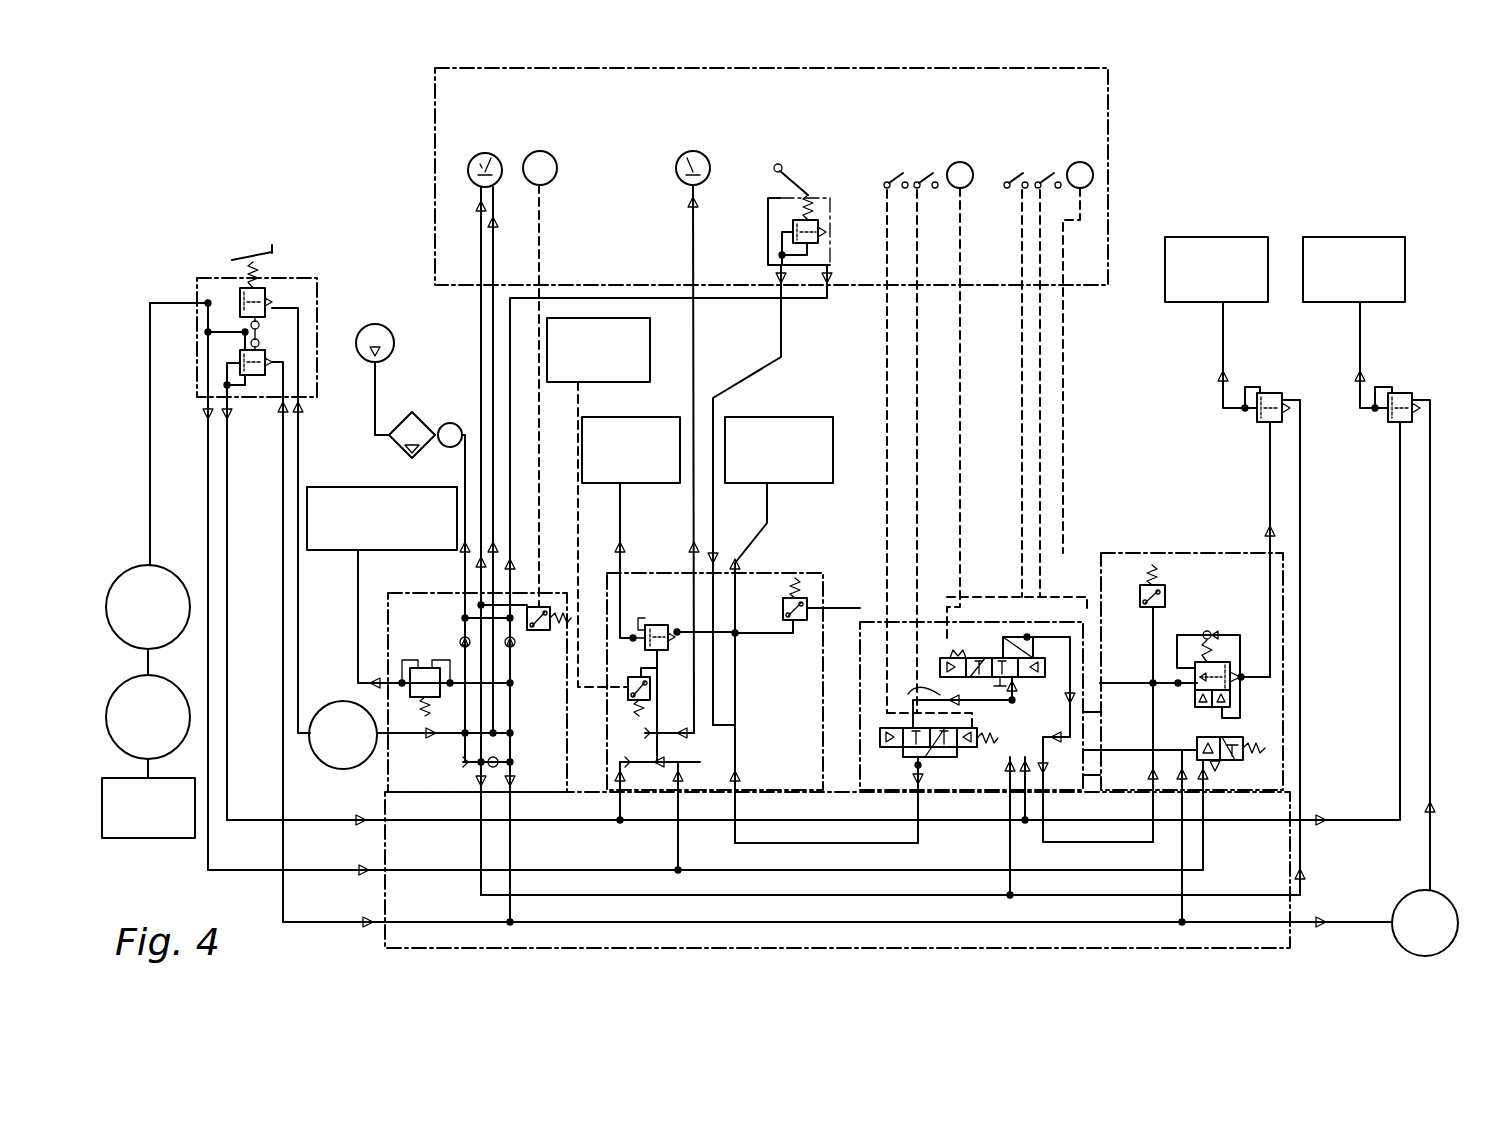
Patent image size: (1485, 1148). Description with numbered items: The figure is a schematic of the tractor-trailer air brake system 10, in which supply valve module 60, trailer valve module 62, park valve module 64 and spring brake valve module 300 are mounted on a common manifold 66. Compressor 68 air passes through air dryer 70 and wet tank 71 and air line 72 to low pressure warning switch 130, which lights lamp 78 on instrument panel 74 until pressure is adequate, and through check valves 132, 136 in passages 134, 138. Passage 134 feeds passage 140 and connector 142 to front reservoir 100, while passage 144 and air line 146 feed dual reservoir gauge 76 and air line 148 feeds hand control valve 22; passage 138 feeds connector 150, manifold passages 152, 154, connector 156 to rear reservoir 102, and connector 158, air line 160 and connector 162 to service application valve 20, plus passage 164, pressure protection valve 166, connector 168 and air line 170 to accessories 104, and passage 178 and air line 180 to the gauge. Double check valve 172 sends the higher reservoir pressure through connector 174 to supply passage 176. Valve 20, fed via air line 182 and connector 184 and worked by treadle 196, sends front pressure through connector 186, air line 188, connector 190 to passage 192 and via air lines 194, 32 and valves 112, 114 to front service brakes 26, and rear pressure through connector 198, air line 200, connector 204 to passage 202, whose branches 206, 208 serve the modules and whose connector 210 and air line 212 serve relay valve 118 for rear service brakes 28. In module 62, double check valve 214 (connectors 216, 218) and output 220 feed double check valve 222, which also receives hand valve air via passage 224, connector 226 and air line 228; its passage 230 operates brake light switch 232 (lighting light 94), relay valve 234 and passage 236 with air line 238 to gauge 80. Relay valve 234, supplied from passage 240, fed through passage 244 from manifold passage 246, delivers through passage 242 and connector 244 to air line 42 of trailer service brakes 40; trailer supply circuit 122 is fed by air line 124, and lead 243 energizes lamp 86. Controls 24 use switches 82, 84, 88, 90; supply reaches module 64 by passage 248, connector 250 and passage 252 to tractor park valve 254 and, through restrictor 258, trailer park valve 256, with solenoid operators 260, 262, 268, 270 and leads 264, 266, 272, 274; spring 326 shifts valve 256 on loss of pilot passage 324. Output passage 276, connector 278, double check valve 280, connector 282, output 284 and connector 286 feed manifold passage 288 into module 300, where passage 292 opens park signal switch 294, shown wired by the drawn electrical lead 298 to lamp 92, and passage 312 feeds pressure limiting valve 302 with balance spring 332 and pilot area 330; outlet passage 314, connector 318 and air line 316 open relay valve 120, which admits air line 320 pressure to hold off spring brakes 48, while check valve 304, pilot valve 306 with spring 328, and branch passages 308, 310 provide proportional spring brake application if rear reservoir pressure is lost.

The system 10 is at (328, 188).
The air brake service application valve 20 is at (205, 278).
The trailer brake hand control valve 22 is at (764, 215).
The electrical parking brake controls 24 is at (985, 115).
The front service brakes 26 is at (173, 840).
The rear service brakes 28 is at (1378, 240).
The air line 32 is at (148, 395).
The trailer service brakes 40 is at (640, 417).
The air line 42 is at (618, 540).
The tractor rear spring brakes 48 is at (1242, 240).
The supply valve module 60 is at (440, 590).
The trailer valve module 62 is at (818, 573).
The park valve module 64 is at (875, 617).
The manifold 66 is at (380, 940).
The compressor 68 is at (374, 325).
The air dryer 70 is at (411, 412).
The wet tank 71 is at (446, 424).
The air line 72 is at (466, 440).
The instrument panel 74 is at (430, 104).
The dual reservoir gauge 76 is at (478, 178).
The low pressure warning lamp 78 is at (545, 190).
The service pressure gauge 80 is at (688, 182).
The trailer park control momentary "on" switch 82 is at (918, 196).
The trailer park control momentary "off" switch 84 is at (886, 195).
The trailer park indicating lamp 86 is at (959, 195).
The tractor park control momentary "on" switch 88 is at (1010, 195).
The tractor park control momentary "off" switch 90 is at (1042, 196).
The parking brake indicator lamp 92 is at (1077, 195).
The service brake light 94 is at (588, 383).
The front reservoir 100 is at (335, 769).
The rear reservoir 102 is at (1407, 892).
The air operated accessories 104 is at (338, 488).
The automatic limiting valve 112 is at (140, 565).
The quick release valve 114 is at (136, 676).
The relay valve 118 is at (1396, 425).
The relay valve 120 is at (1255, 425).
The trailer air supply circuit 122 is at (810, 417).
The air line 124 is at (768, 520).
The low pressure warning switch 130 is at (538, 605).
The check valve 132 is at (462, 636).
The air passage 134 is at (465, 700).
The check valve 136 is at (516, 641).
The air passage 138 is at (512, 667).
The air passage 140 is at (470, 762).
The connector 142 is at (428, 740).
The passage 144 is at (483, 693).
The air line 146 is at (478, 318).
The air line 148 is at (490, 345).
The connector 150 is at (512, 782).
The manifold passage 152 is at (512, 850).
The manifold passage 154 is at (768, 922).
The connector 156 is at (1325, 926).
The connector 158 is at (360, 920).
The air line 160 is at (281, 567).
The connector 162 is at (281, 413).
The passage 164 is at (440, 668).
The pressure protection valve 166 is at (405, 668).
The connector 168 is at (366, 683).
The air line 170 is at (356, 610).
The double check valve 172 is at (500, 745).
The connector 174 is at (475, 780).
The manifold passage 176 is at (478, 888).
The passage 178 is at (495, 713).
The air line 180 is at (478, 292).
The air line 182 is at (300, 446).
The connector 184 is at (302, 410).
The valve connector 186 is at (205, 418).
The air line 188 is at (206, 470).
The connector 190 is at (355, 870).
The manifold passage 192 is at (590, 870).
The air line 194 is at (165, 300).
The treadle 196 is at (236, 260).
The connector 198 is at (228, 455).
The air line 200 is at (229, 505).
The manifold passage 202 is at (408, 823).
The connector 204 is at (352, 820).
The branch passage 206 is at (615, 808).
The branch passage 208 is at (1030, 800).
The outlet connector 210 is at (1322, 826).
The air line 212 is at (1398, 774).
The double check valve 214 is at (624, 780).
The connector 216 is at (617, 768).
The connector 218 is at (682, 782).
The output 220 is at (650, 710).
The double check valve 222 is at (735, 758).
The passage 224 is at (740, 726).
The connector 226 is at (716, 552).
The air line 228 is at (781, 360).
The passage 230 is at (660, 720).
The service brake light switch 232 is at (655, 668).
The relay valve 234 is at (656, 625).
The passage 236 is at (713, 686).
The air line 238 is at (697, 342).
The trailer supply circuit passage 240 is at (736, 636).
The passage 242 is at (622, 578).
The electrical lead 243 is at (929, 437).
The connector 244 is at (626, 553).
The manifold passage 246 is at (736, 840).
The branch manifold passage 248 is at (1010, 851).
The connector 250 is at (930, 757).
The module passage 252 is at (1017, 706).
The tractor park valve 254 is at (988, 658).
The trailer park valve 256 is at (915, 798).
The choke or restrictor 258 is at (935, 690).
The solenoid operator 260 is at (945, 665).
The solenoid operator 262 is at (1030, 645).
The electrical lead 264 is at (1020, 330).
The electrical lead 266 is at (1038, 380).
The solenoid operator 268 is at (1062, 733).
The solenoid operator 270 is at (880, 738).
The electrical lead 272 is at (905, 325).
The electrical lead 274 is at (886, 405).
The output passage 276 is at (1072, 652).
The connector 278 is at (1150, 685).
The double check valve 280 is at (1090, 712).
The connector 282 is at (1008, 782).
The output 284 is at (1090, 750).
The connector 286 is at (1090, 775).
The manifold passage 288 is at (1065, 845).
The module passage 292 is at (1152, 680).
The park signal switch 294 is at (1145, 585).
The electrical line 298 is at (1065, 385).
The spring brake valve module 300 is at (1187, 552).
The pressure limiting valve 302 is at (1196, 662).
The check valve 304 is at (1207, 630).
The pilot valve 306 is at (1232, 765).
The manifold branch passage 308 is at (1180, 878).
The manifold branch passage 310 is at (1205, 838).
The passage 312 is at (1182, 686).
The module passage 314 is at (1268, 590).
The air line 316 is at (1268, 456).
The connector 318 is at (1266, 530).
The air line 320 is at (1302, 530).
The passage 324 is at (908, 757).
The spring 326 is at (985, 750).
The pilot valve spring 328 is at (1258, 746).
The larger pilot area 330 is at (1195, 702).
The balance spring 332 is at (1212, 648).